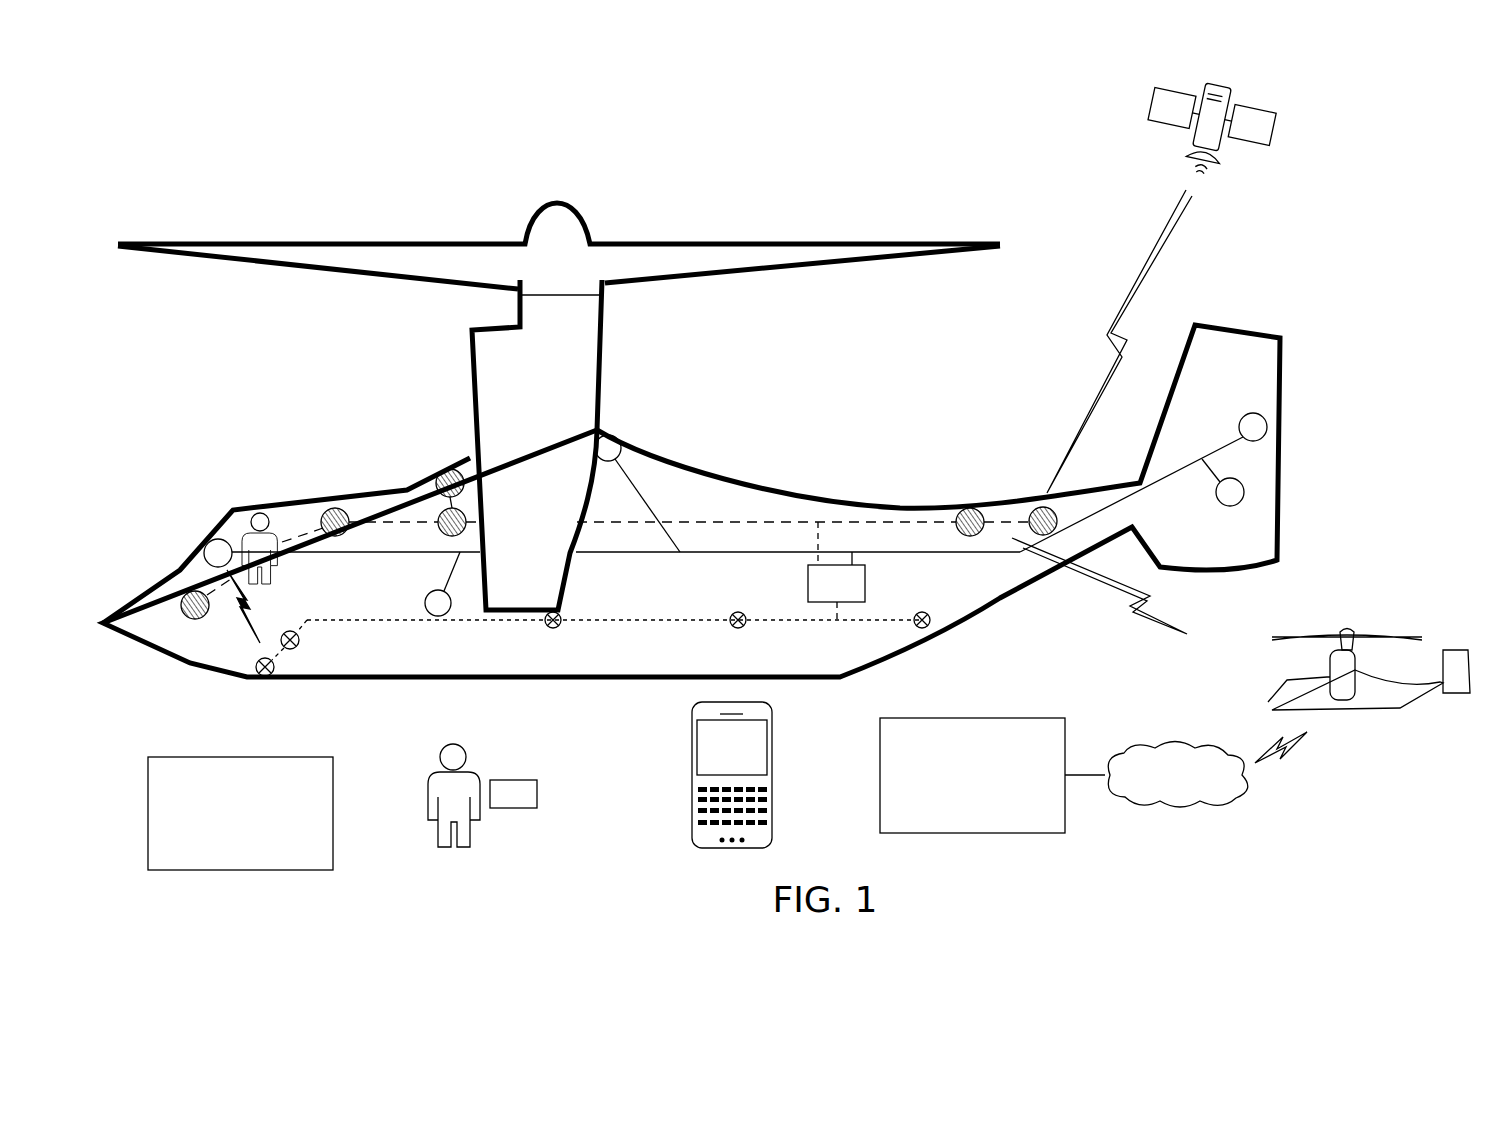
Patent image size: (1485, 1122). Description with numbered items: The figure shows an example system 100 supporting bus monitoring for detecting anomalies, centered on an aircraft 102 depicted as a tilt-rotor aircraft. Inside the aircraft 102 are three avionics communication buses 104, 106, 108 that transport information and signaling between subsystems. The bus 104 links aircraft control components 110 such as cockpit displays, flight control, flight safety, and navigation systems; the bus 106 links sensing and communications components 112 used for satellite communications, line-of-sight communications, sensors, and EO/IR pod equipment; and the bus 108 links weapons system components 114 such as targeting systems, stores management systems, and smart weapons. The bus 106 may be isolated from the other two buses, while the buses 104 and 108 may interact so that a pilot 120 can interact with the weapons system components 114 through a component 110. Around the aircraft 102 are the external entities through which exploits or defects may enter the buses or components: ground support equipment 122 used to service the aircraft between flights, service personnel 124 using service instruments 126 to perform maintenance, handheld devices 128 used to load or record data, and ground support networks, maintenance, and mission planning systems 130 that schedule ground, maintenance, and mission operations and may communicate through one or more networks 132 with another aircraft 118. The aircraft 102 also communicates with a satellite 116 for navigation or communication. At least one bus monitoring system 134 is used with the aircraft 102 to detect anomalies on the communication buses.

The system 100 is at (376, 176).
The aircraft 102 is at (698, 460).
The communication bus 104 is at (623, 560).
The communication bus 106 is at (862, 518).
The communication bus 108 is at (770, 615).
The aircraft control components 110 is at (420, 602).
The sensing and communications components 112 is at (968, 542).
The weapons system components 114 is at (568, 626).
The satellite 116 is at (1204, 80).
The other aircraft 118 is at (1400, 714).
The pilot 120 is at (240, 530).
The ground support equipment 122 is at (243, 753).
The service personnel 124 is at (447, 738).
The service instruments 126 is at (515, 776).
The handheld devices 128 is at (688, 799).
The ground support networks, maintenance, and mission planning systems 130 is at (960, 674).
The networks 132 is at (1177, 741).
The bus monitoring system 134 is at (836, 571).